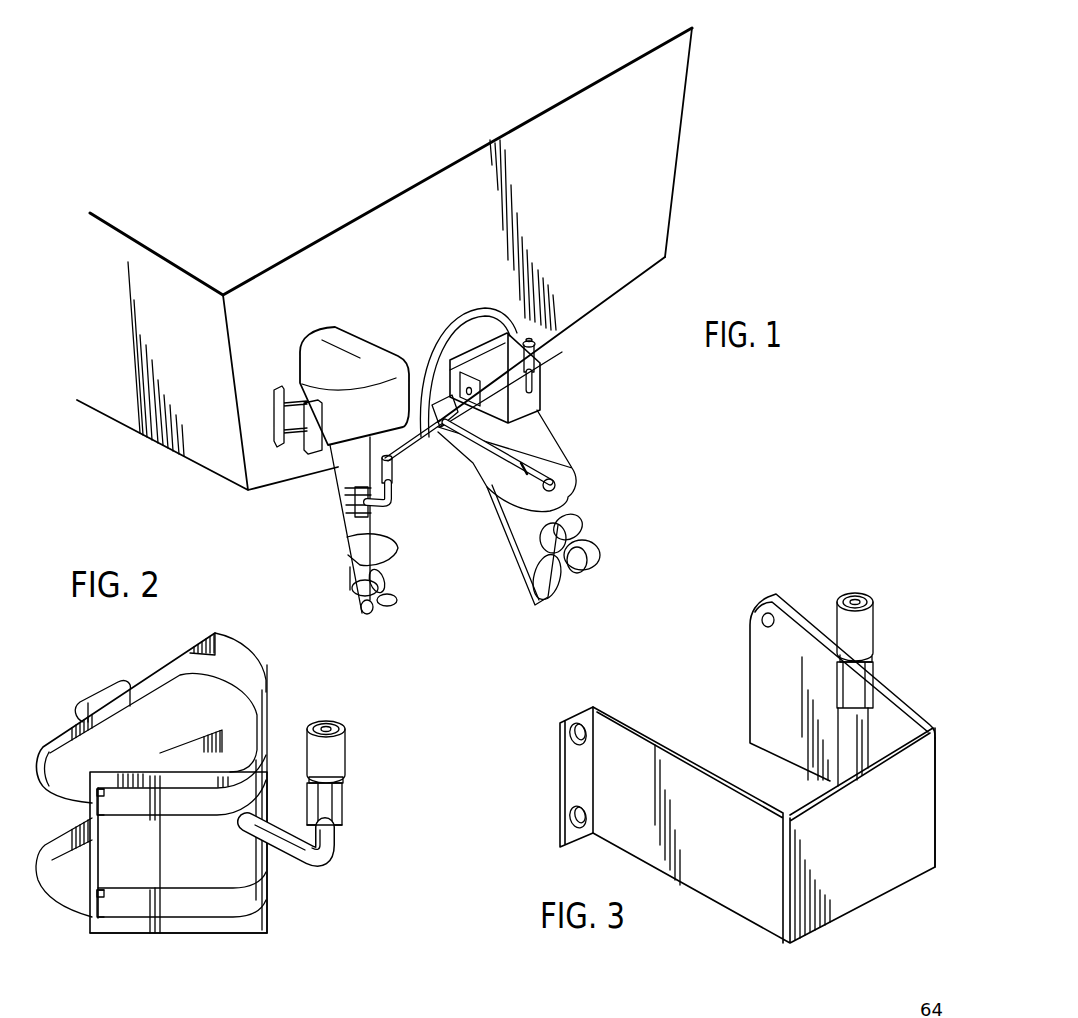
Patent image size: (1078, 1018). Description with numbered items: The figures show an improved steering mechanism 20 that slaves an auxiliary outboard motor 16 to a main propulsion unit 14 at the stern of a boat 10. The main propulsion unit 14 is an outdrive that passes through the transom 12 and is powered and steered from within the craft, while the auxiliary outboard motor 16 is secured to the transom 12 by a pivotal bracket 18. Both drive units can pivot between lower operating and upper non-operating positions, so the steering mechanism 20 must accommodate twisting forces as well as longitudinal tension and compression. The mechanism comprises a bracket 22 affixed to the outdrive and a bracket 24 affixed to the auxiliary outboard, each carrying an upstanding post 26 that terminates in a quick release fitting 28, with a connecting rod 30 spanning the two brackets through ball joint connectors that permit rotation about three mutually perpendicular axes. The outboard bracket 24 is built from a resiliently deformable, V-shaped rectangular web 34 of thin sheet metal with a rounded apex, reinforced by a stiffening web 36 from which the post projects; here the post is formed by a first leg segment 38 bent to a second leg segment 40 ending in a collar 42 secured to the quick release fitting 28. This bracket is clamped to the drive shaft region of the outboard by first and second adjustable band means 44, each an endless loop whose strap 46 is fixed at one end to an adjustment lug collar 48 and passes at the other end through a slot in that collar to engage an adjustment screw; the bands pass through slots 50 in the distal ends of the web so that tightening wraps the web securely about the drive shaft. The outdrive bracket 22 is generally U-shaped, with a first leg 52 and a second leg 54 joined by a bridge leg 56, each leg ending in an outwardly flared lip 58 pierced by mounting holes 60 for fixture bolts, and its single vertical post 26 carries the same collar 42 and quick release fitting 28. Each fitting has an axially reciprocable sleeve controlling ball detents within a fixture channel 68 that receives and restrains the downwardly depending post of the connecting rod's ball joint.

In FIG. 1, the boat 10 is at (698, 87).
In FIG. 1, the transom 12 is at (660, 157).
In FIG. 1, the main propulsion unit 14 is at (497, 305).
In FIG. 1, the auxiliary outboard motor 16 is at (360, 333).
In FIG. 1, the pivotal bracket 18 is at (291, 450).
In FIG. 1, the steering mechanism 20 is at (435, 442).
In FIG. 1, the bracket 22 is at (546, 396).
In FIG. 3, the bracket 22 is at (707, 906).
In FIG. 1, the bracket 24 is at (347, 512).
In FIG. 2, the bracket 24 is at (165, 937).
In FIG. 1, the upstanding post 26 is at (541, 368).
In FIG. 2, the upstanding post 26 is at (342, 850).
In FIG. 3, the upstanding post 26 is at (869, 726).
In FIG. 1, the quick release fitting 28 is at (540, 345).
In FIG. 2, the quick release fitting 28 is at (350, 758).
In FIG. 3, the quick release fitting 28 is at (875, 633).
In FIG. 1, the connecting rod 30 is at (459, 390).
In FIG. 2, the rectangular web 34 is at (100, 867).
In FIG. 2, the stiffening web 36 is at (263, 913).
In FIG. 2, the first leg segment 38 is at (290, 848).
In FIG. 2, the second leg segment 40 is at (327, 836).
In FIG. 2, the collar 42 is at (332, 806).
In FIG. 3, the collar 42 is at (862, 682).
In FIG. 2, the adjustable band means 44 is at (235, 655).
In FIG. 2, the strap 46 is at (172, 660).
In FIG. 2, the adjustment lug collar 48 is at (100, 695).
In FIG. 2, the slots 50 is at (103, 890).
In FIG. 3, the first leg 52 is at (676, 760).
In FIG. 3, the second leg 54 is at (755, 682).
In FIG. 3, the bridge leg 56 is at (880, 830).
In FIG. 3, the outwardly flared lip 58 is at (782, 603).
In FIG. 3, the mounting holes 60 is at (765, 602).
In FIG. 2, the fixture channel 68 is at (328, 722).
In FIG. 3, the fixture channel 68 is at (856, 603).